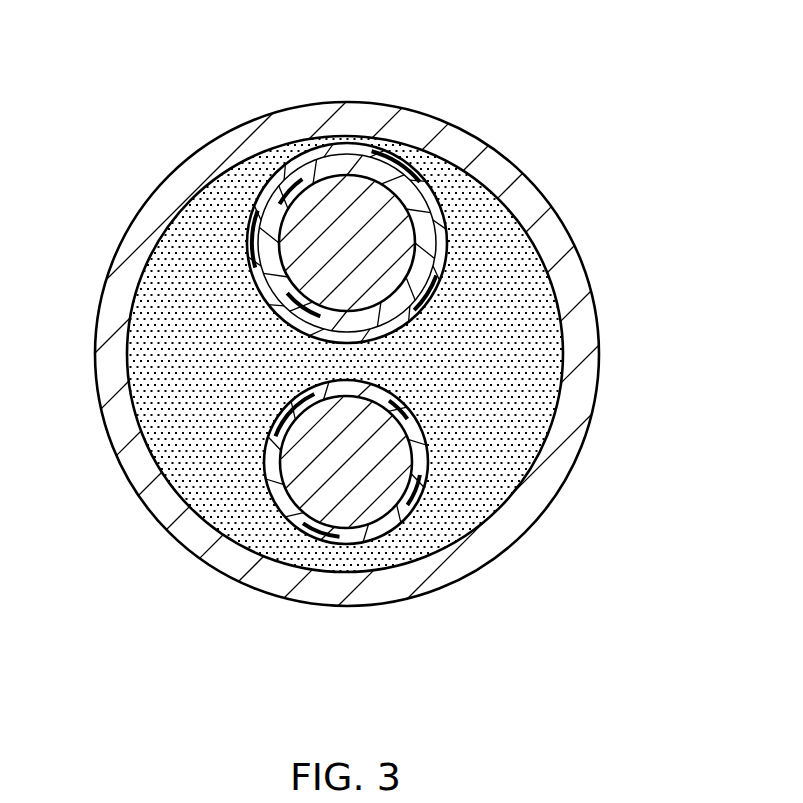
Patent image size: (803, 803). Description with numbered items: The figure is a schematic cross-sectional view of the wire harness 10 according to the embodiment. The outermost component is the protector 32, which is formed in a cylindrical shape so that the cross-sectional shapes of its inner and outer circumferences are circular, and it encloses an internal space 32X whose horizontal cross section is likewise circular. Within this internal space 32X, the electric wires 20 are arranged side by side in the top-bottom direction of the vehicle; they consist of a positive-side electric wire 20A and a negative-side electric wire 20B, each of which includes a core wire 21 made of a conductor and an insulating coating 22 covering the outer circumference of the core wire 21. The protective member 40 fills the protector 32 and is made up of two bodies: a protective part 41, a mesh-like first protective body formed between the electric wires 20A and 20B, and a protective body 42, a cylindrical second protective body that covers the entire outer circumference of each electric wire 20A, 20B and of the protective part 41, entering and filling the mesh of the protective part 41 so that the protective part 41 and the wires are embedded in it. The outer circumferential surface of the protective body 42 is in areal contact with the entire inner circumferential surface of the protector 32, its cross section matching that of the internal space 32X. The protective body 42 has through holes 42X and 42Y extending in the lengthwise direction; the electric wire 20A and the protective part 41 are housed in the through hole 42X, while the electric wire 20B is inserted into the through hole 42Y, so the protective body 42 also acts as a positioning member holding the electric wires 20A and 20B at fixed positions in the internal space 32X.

The cable 10 is at (663, 125).
The electric wires 20 is at (254, 356).
The positive-side electric wire 20A is at (387, 67).
The negative-side electric wire 20B is at (387, 643).
The core wire 21 is at (322, 200).
The insulating coating 22 is at (380, 183).
The protector 32 is at (581, 280).
The internal space 32X is at (558, 336).
The protective member 40 is at (603, 160).
The protective part 41 is at (465, 180).
The protective body 42 is at (490, 218).
The through hole 42X is at (254, 222).
The through hole 42Y is at (266, 463).